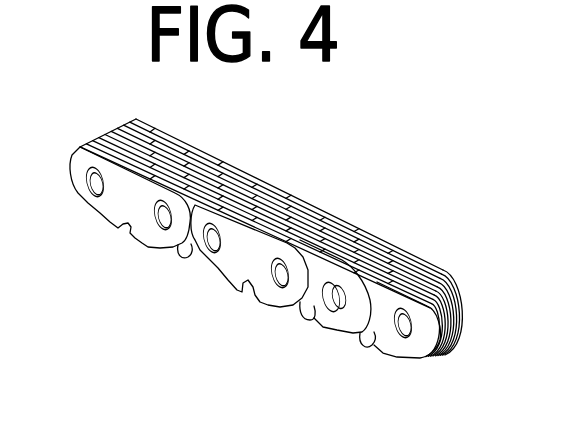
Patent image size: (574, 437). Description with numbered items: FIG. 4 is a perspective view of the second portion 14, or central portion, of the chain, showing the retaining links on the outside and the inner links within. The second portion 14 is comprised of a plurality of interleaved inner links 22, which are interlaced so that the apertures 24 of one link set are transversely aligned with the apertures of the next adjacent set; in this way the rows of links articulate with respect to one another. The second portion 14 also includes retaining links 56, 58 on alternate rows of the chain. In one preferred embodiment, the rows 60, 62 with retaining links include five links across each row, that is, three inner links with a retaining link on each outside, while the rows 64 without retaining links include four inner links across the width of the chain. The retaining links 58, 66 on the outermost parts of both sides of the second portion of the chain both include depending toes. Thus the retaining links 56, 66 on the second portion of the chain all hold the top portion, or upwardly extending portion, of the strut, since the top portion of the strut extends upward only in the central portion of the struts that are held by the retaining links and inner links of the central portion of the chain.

The second portion 14 is at (458, 352).
The inner links 22 is at (407, 352).
The apertures 24 is at (333, 320).
The retaining link 56 is at (122, 202).
The retaining link 58 is at (242, 260).
The row 60 is at (208, 133).
The row 62 is at (318, 190).
The rows without retaining links 64 is at (243, 169).
The retaining link 66 is at (326, 212).